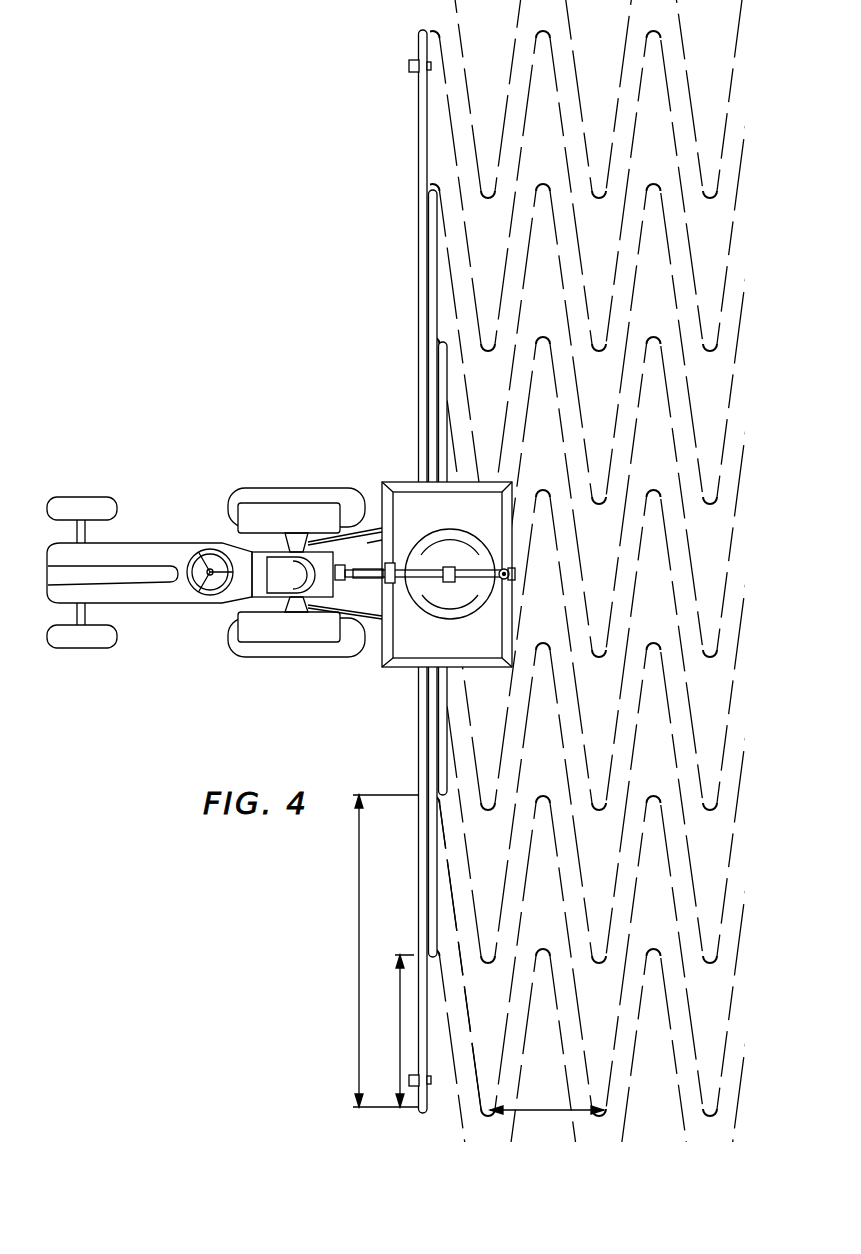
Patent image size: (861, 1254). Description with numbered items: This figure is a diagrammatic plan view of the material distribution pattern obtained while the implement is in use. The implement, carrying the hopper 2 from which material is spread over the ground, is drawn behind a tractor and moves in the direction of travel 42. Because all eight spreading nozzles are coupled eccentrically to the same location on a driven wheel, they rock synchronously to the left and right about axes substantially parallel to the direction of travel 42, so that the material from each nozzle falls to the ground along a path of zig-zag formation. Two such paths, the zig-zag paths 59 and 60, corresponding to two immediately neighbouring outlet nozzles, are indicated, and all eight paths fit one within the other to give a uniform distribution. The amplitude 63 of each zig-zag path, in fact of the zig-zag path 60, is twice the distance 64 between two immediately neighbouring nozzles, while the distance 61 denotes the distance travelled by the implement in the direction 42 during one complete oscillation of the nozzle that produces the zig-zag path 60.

The direction of travel 42 is at (215, 448).
The hopper 2 is at (402, 482).
The zig-zag path 59 is at (573, 627).
The zig-zag path 60 is at (470, 972).
The distance 61 is at (553, 1092).
The amplitude 63 is at (360, 957).
The distance between two immediately neighbouring nozzles 64 is at (400, 1017).